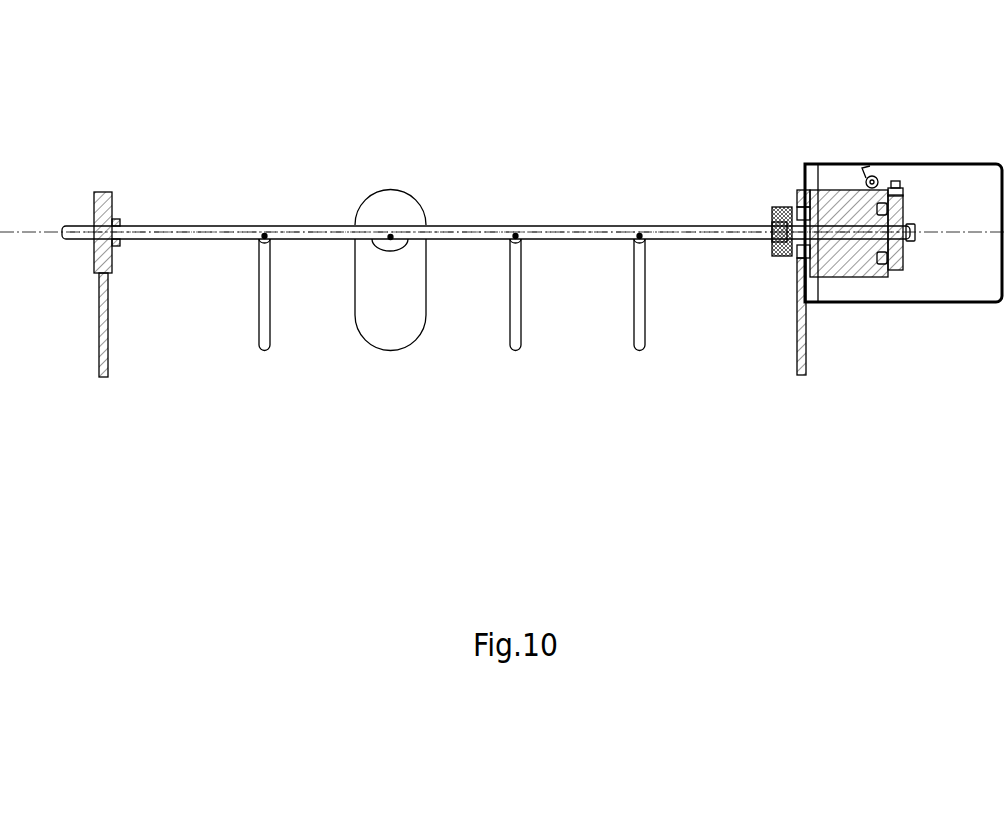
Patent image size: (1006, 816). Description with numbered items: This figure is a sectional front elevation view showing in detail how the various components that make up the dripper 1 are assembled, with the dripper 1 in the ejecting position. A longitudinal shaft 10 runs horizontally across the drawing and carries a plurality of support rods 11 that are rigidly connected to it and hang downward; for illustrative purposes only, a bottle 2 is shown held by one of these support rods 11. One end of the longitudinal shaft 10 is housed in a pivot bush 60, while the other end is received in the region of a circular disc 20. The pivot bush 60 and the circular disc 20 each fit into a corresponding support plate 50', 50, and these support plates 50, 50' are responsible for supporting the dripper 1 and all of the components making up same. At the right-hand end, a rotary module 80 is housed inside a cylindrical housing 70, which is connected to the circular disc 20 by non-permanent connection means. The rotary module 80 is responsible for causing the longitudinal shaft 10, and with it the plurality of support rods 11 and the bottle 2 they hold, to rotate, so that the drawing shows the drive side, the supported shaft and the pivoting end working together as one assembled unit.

The dripper 1 is at (491, 102).
The bottle 2 is at (390, 350).
The longitudinal shaft 10 is at (228, 226).
The support rods 11 is at (639, 350).
The circular disc 20 is at (796, 199).
The support plate 50 is at (803, 369).
The support plate 50' is at (108, 377).
The pivot bush 60 is at (103, 192).
The cylindrical housing 70 is at (948, 200).
The rotary module 80 is at (845, 199).